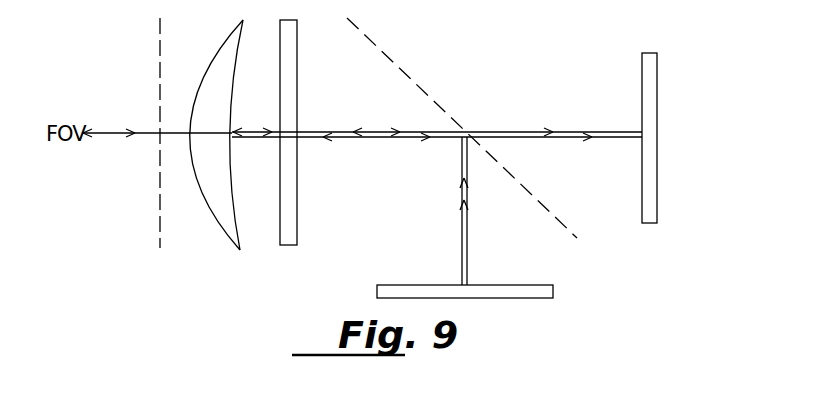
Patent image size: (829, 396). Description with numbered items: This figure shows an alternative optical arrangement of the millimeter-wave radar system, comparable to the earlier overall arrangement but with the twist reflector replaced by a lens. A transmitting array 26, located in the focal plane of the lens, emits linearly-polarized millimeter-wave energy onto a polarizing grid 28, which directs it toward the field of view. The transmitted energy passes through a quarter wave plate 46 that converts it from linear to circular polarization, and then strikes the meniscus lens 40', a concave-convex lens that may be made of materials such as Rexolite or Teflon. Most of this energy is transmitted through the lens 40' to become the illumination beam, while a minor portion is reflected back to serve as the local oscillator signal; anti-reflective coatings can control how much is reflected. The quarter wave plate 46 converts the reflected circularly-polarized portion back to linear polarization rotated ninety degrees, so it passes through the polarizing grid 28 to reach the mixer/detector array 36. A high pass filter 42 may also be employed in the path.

The high pass filter 42 is at (158, 233).
The meniscus lens 40' is at (216, 160).
The quarter wave plate 46 is at (284, 246).
The polarizing grid 28 is at (388, 57).
The mixer/detector array 36 is at (652, 112).
The transmitting array 26 is at (378, 288).